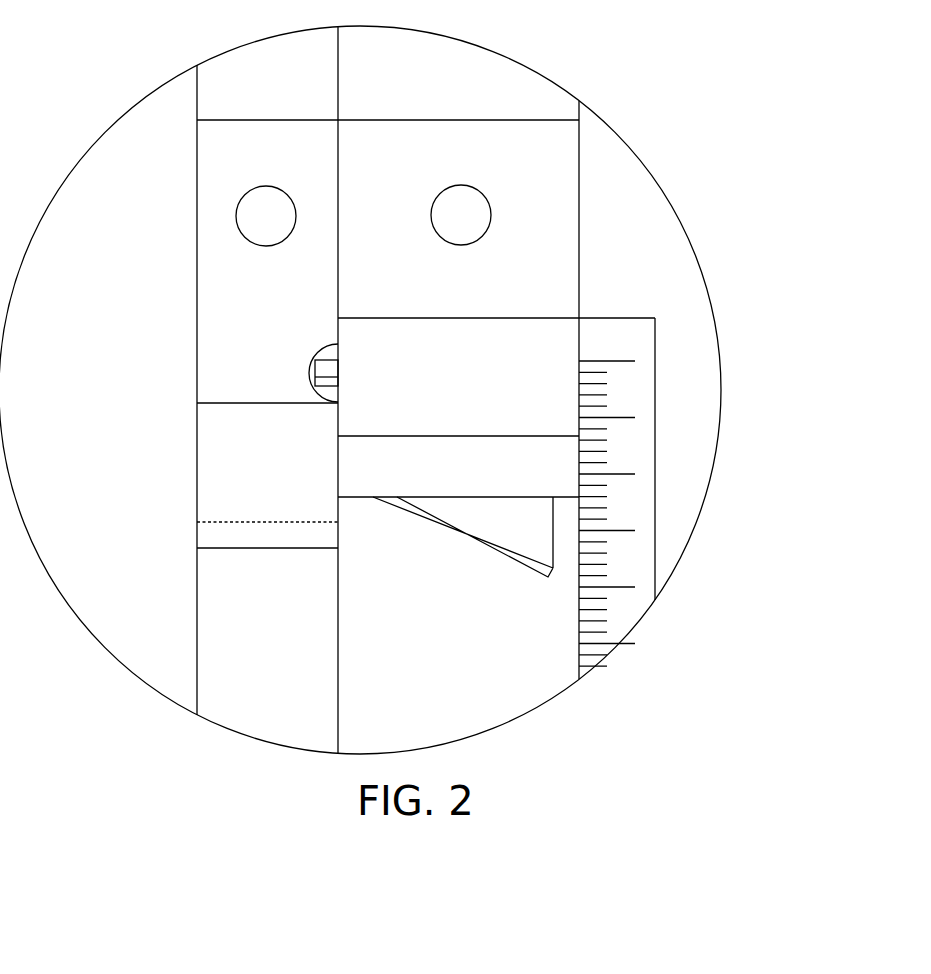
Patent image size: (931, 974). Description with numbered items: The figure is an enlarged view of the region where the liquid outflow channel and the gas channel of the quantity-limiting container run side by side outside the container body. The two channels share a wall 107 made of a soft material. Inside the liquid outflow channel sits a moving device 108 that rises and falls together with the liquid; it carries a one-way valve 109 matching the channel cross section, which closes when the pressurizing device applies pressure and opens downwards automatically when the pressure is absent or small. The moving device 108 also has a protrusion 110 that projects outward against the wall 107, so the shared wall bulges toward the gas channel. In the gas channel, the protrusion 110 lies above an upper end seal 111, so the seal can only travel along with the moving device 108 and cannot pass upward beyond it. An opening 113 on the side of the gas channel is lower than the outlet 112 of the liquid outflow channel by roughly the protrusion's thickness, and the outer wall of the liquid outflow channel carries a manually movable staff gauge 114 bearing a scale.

The wall 107 is at (220, 390).
The moving device 108 is at (501, 361).
The one-way valve 109 is at (463, 563).
The protrusion 110 is at (517, 261).
The upper end seal 111 is at (215, 449).
The outlet 112 is at (573, 151).
The opening 113 is at (205, 192).
The staff gauge 114 is at (693, 487).